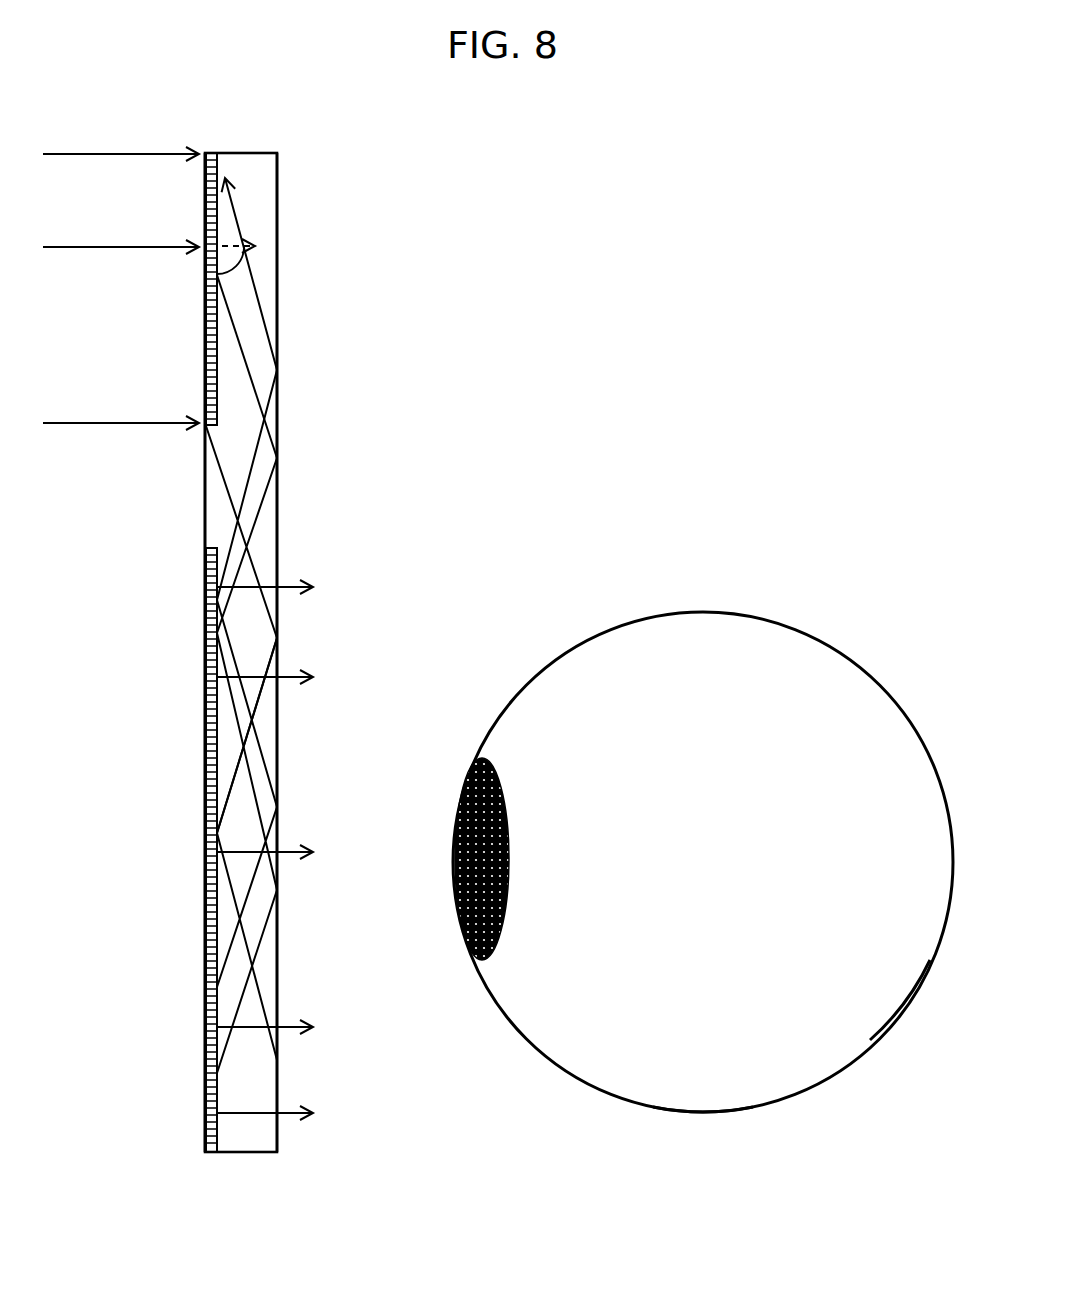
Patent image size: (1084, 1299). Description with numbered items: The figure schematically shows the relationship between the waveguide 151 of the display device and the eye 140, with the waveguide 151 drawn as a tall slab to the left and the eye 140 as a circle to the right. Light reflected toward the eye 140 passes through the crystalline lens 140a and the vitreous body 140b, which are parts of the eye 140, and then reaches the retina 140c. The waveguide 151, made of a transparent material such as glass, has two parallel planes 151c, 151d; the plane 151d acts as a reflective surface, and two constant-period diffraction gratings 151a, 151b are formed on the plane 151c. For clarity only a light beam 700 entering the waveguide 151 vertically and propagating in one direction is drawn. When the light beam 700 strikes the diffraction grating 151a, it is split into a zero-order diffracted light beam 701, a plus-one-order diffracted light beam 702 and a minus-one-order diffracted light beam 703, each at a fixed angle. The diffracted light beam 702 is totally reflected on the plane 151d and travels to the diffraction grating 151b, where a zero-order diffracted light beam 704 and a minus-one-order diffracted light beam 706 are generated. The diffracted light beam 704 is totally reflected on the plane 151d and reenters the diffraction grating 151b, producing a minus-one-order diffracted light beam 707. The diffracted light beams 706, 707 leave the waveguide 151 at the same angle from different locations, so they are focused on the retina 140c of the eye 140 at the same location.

The eye 140 is at (705, 595).
The crystalline lens 140a is at (462, 922).
The vitreous body 140b is at (715, 1082).
The retina 140c is at (912, 1003).
The waveguide 151 is at (189, 465).
The diffraction grating 151a is at (212, 286).
The diffraction grating 151b is at (210, 793).
The plane 151c is at (203, 518).
The plane 151d is at (278, 537).
The light beam 700 is at (92, 245).
The diffracted light beam 701 is at (250, 242).
The diffracted light beam 702 is at (235, 327).
The diffracted light beam 703 is at (230, 182).
The diffracted light beam 704 is at (243, 785).
The diffracted light beam 706 is at (292, 673).
The diffracted light beam 707 is at (292, 1108).